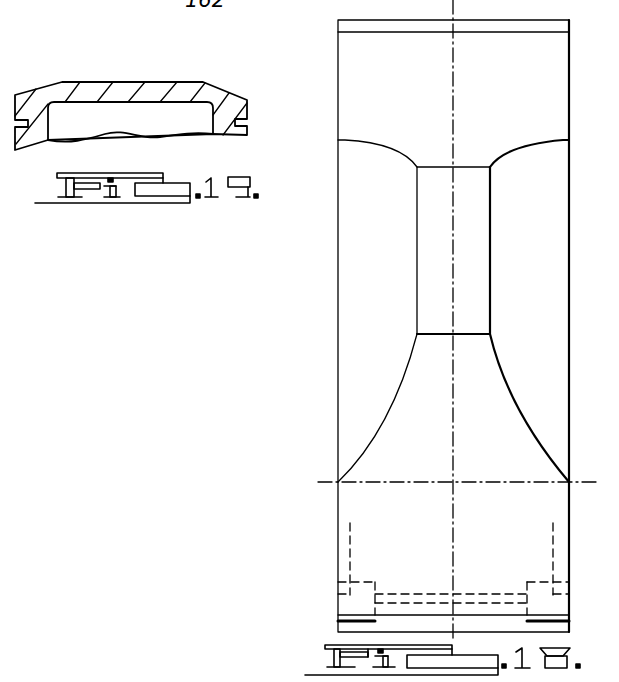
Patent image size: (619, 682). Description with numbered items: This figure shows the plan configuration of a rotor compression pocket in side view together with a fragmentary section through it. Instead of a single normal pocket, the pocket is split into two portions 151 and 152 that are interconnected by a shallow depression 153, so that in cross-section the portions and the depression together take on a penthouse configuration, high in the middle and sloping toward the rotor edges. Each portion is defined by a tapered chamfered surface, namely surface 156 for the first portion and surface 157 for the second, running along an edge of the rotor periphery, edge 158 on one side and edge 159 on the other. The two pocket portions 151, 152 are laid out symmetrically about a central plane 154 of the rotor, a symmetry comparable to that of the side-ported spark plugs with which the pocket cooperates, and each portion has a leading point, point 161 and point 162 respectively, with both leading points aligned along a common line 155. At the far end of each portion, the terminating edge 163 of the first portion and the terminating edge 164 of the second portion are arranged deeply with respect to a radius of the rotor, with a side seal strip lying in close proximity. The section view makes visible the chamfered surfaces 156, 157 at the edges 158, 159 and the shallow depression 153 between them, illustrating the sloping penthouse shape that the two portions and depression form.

In FIG. 18, the pocket portion 151 is at (357, 289).
In FIG. 18, the pocket portion 152 is at (531, 338).
In FIG. 19, the shallow depression 153 is at (130, 82).
In FIG. 18, the shallow depression 153 is at (479, 267).
In FIG. 18, the central plane 154 is at (452, 538).
In FIG. 18, the line 155 is at (428, 443).
In FIG. 19, the tapered chamfered surface 156 is at (33, 89).
In FIG. 18, the tapered chamfered surface 156 is at (367, 349).
In FIG. 19, the tapered chamfered surface 157 is at (224, 90).
In FIG. 18, the tapered chamfered surface 157 is at (533, 398).
In FIG. 18, the edge 158 is at (333, 493).
In FIG. 18, the edge 159 is at (568, 490).
In FIG. 18, the leading point 161 is at (340, 484).
In FIG. 18, the leading point 162 is at (563, 488).
In FIG. 18, the terminating edge 163 is at (337, 247).
In FIG. 18, the terminating edge 164 is at (569, 207).